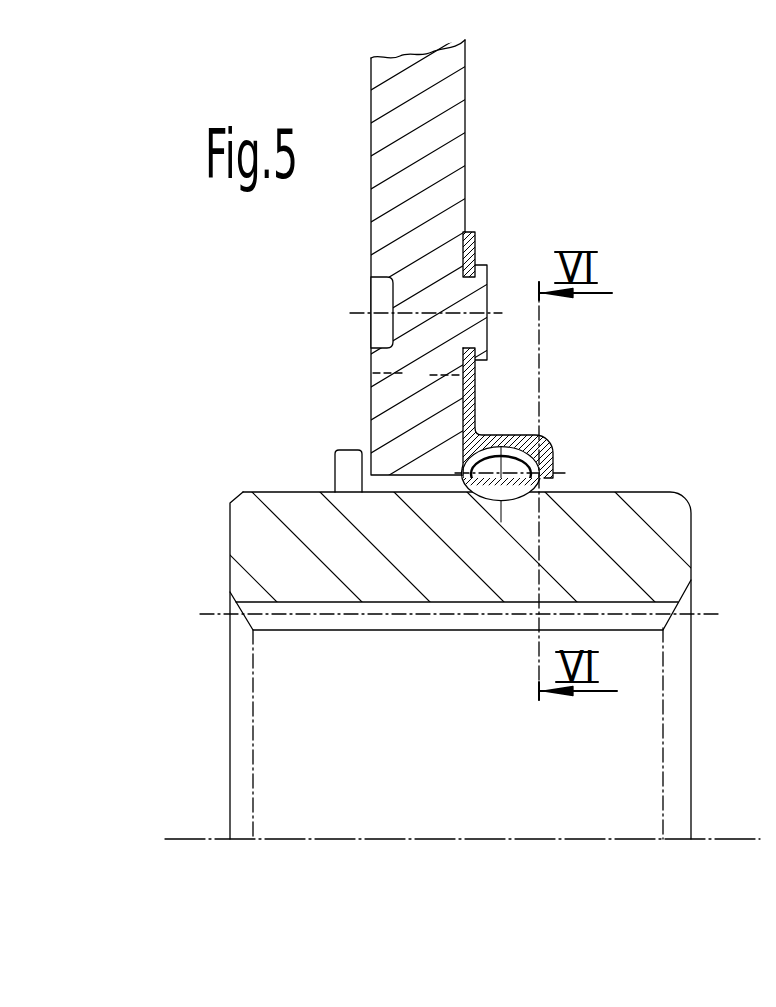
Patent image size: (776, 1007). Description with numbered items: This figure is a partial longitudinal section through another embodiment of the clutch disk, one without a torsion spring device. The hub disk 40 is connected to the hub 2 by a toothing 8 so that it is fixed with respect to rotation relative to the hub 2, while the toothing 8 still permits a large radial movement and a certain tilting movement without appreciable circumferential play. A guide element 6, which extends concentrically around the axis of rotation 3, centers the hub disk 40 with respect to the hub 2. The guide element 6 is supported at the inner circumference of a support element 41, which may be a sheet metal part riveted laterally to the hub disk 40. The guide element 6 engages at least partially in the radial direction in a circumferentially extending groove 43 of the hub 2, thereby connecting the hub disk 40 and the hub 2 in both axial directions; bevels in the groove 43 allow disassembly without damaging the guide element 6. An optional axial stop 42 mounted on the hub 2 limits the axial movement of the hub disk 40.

The hub 2 is at (670, 535).
The axis of rotation 3 is at (505, 840).
The guide element 6 is at (552, 453).
The toothing 8 is at (417, 497).
The hub disk 40 is at (443, 107).
The support element 41 is at (476, 384).
The axial stop 42 is at (335, 477).
The groove 43 is at (493, 500).